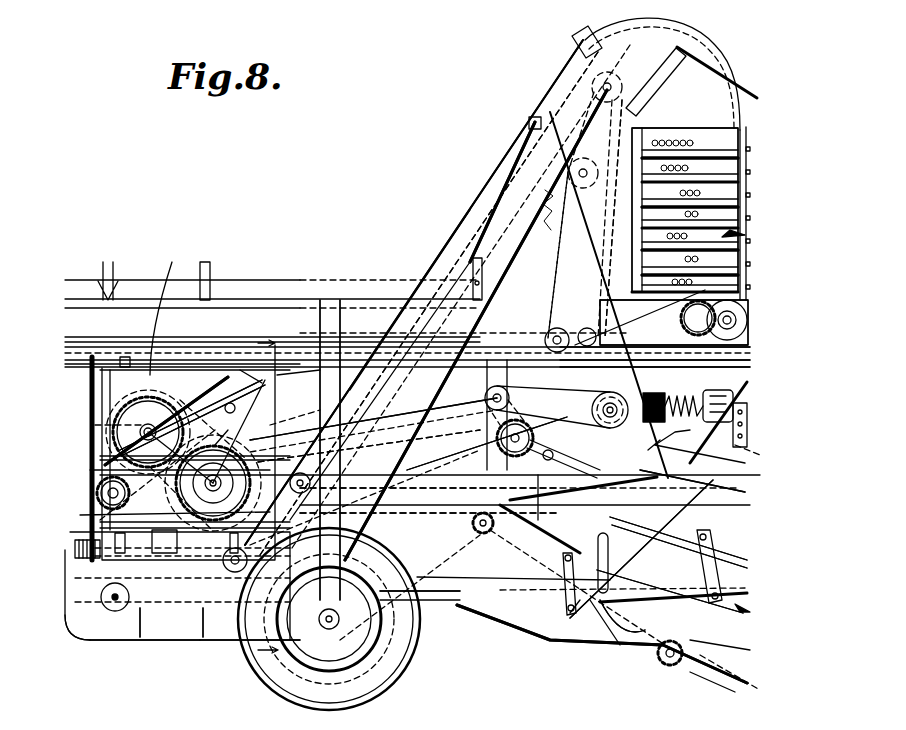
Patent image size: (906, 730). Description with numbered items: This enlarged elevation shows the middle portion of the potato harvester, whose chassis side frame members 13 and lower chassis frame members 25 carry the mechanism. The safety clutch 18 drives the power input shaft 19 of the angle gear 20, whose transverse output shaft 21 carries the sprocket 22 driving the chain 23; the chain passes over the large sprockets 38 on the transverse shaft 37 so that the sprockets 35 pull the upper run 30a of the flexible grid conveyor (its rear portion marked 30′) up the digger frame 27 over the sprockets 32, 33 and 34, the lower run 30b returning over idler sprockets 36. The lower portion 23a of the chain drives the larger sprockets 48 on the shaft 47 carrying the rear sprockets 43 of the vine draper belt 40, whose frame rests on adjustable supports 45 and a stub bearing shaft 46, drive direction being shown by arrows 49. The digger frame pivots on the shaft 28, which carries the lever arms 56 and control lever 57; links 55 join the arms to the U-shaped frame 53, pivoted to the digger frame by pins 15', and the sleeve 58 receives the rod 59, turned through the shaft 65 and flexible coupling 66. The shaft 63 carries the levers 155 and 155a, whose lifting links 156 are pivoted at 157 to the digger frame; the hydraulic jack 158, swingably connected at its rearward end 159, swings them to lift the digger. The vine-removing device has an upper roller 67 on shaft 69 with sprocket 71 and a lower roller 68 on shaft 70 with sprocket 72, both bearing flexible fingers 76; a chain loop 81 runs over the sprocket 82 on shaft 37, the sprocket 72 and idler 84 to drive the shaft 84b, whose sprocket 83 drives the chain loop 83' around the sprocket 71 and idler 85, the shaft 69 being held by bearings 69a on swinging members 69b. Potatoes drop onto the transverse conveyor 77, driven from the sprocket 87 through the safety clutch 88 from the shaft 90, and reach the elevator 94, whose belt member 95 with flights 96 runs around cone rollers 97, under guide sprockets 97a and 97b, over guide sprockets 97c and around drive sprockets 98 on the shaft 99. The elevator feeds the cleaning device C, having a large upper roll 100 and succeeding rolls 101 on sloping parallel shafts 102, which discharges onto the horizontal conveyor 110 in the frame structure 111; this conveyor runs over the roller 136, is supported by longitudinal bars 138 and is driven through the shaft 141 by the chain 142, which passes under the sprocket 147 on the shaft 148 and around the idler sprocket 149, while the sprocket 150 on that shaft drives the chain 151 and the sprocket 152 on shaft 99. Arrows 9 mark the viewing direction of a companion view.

The drive sprockets 98 is at (580, 60).
The transverse shaft 99 is at (597, 90).
The sprocket 152 is at (620, 86).
The guide sprockets 97c is at (530, 130).
The belt member 95 is at (500, 170).
The flights 96 is at (478, 205).
The elevator 94 is at (438, 262).
The shaft 90 is at (172, 248).
The horizontal conveyor 110 is at (250, 310).
The frame structure 111 is at (355, 310).
The longitudinal bars 138 is at (355, 308).
The chain 151 is at (575, 250).
The shaft 148 is at (595, 282).
The sprocket 150 is at (598, 300).
The idler sprocket 149 is at (560, 335).
The sprocket 147 is at (688, 318).
The upper roll 100 is at (723, 138).
The rolls 101 is at (725, 165).
The horizontal shafts 102 is at (748, 197).
The cleaning device C is at (745, 235).
The roller 136 is at (745, 300).
The shaft 141 is at (745, 317).
The chain 142 is at (740, 357).
The safety clutch 18 is at (735, 387).
The power input shaft 19 is at (700, 394).
The angle gear 20 is at (660, 395).
The transverse power output shaft 21 is at (600, 395).
The sprocket 22 is at (600, 408).
The chain 23 is at (555, 395).
The transverse shaft 47 is at (506, 400).
The stub bearing shaft 46 is at (545, 445).
The shaft 63 is at (747, 412).
The lever 155 is at (748, 430).
The lever 155a is at (755, 450).
The shaft 65 is at (735, 470).
The flexible coupling 66 is at (745, 492).
The adjustable lifting links 156 is at (745, 555).
The vine draper belt 40 is at (745, 598).
The U-shaped frame 53 is at (750, 612).
The pivot connection 157 is at (755, 650).
The chain 30′ is at (745, 682).
The digger frame 27 is at (722, 688).
The idler sprockets 36 is at (680, 665).
The pins 15' is at (674, 615).
The sprockets 32 is at (595, 645).
The internally threaded sleeve 58 is at (575, 650).
The control lever 57 is at (562, 640).
The shaft 28 is at (530, 640).
The links 55 is at (622, 621).
The adjustable supports 45 is at (690, 565).
The rod 59 is at (632, 546).
The lever arms 56 is at (604, 518).
The hydraulic jack 158 is at (587, 513).
The rearward end 159 is at (510, 498).
The side frame members 13 is at (445, 508).
The sprockets 33 is at (465, 535).
The upper run 30a is at (525, 535).
The lower run 30b is at (455, 645).
The chassis frame members 25 is at (455, 590).
The larger sprockets 48 is at (462, 462).
The rear sprockets 43 is at (492, 438).
The lower portion of chain 23a is at (490, 412).
The arrows 49 is at (392, 428).
The sprockets 34 is at (345, 445).
The large sprockets 38 is at (275, 446).
The sprockets 35 is at (276, 412).
The transverse shaft 37 is at (298, 381).
The members 69b is at (213, 461).
The chain loop 81 is at (241, 405).
The idler 85 is at (226, 430).
The idler 84 is at (275, 345).
The shaft 84b is at (240, 370).
The chain loop 83' is at (143, 342).
The sprocket 83 is at (166, 416).
The bearings 69a is at (148, 420).
The section line 9 is at (259, 497).
The fingers 76 is at (90, 383).
The upper roller 67 is at (125, 413).
The sprocket 71 is at (95, 425).
The shaft 69 is at (120, 442).
The sprocket 72 is at (90, 470).
The shaft 70 is at (97, 492).
The lower roller 68 is at (80, 515).
The sprocket 87 is at (78, 568).
The safety clutch 88 is at (80, 590).
The sprocket 82 is at (160, 553).
The transverse grid conveyor 77 is at (222, 565).
The cone rollers 97 is at (95, 640).
The guide sprockets 97a is at (170, 638).
The guide sprockets 97b is at (225, 638).